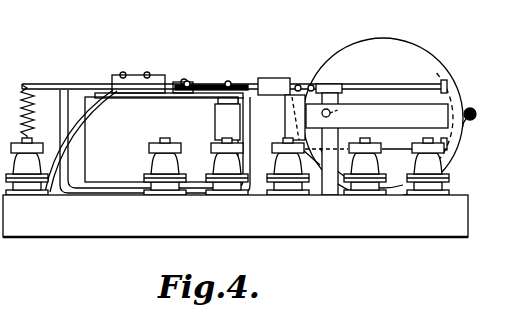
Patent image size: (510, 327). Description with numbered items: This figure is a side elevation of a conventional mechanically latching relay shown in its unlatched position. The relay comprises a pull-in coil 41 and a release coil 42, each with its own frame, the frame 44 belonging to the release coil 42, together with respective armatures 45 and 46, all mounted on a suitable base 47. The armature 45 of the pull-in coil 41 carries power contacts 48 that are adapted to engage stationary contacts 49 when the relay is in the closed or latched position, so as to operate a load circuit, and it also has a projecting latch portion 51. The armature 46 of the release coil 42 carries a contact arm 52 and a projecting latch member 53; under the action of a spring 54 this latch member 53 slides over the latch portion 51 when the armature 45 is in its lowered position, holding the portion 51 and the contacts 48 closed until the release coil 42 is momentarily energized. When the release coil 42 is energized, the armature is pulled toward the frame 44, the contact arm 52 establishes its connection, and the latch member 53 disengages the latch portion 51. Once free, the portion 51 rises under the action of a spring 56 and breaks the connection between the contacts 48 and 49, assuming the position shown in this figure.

The pull-in coil 41 is at (164, 127).
The release coil 42 is at (378, 58).
The frame 44 is at (445, 80).
The armature 45 is at (43, 86).
The armature 46 is at (396, 84).
The base 47 is at (72, 226).
The power contacts 48 is at (247, 97).
The stationary contacts 49 is at (215, 101).
The latch portion 51 is at (240, 88).
The contact arm 52 is at (347, 110).
The latch member 53 is at (268, 82).
The spring 54 is at (463, 126).
The spring 56 is at (47, 115).